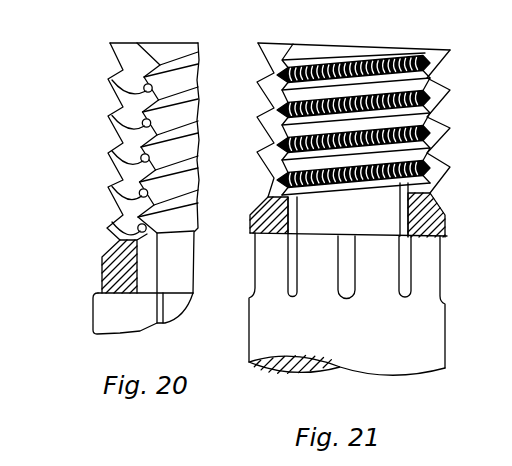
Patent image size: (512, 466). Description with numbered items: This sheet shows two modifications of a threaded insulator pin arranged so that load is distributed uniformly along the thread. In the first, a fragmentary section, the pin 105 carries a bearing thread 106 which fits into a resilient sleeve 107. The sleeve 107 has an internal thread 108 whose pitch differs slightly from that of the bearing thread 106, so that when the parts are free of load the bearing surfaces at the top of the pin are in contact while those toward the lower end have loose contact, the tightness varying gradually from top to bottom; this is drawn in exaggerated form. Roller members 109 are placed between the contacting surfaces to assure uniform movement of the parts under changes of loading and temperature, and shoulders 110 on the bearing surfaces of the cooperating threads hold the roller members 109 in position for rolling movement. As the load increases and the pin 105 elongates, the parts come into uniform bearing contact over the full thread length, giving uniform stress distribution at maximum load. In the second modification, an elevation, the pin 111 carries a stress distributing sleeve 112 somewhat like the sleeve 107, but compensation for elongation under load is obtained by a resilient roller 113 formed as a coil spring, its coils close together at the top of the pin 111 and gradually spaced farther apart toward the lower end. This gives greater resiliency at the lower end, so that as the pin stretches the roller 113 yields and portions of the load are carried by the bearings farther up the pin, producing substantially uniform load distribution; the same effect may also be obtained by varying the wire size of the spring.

In FIG. 20, the pin 105 is at (166, 268).
In FIG. 20, the bearing thread 106 is at (122, 106).
In FIG. 20, the resilient sleeve 107 is at (121, 228).
In FIG. 20, the internal thread 108 is at (122, 70).
In FIG. 20, the roller members 109 is at (139, 193).
In FIG. 20, the shoulders 110 is at (140, 157).
In FIG. 21, the pin 111 is at (423, 339).
In FIG. 21, the stress distributing sleeve 112 is at (430, 187).
In FIG. 21, the resilient roller 113 is at (349, 66).